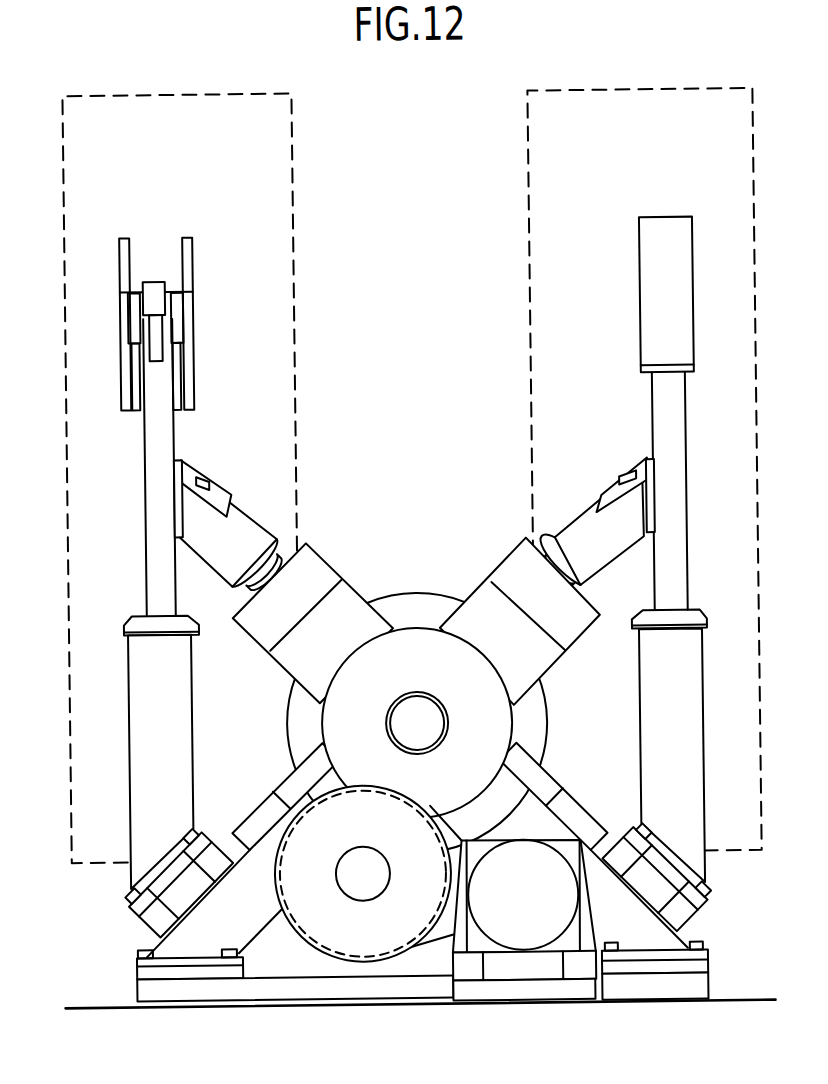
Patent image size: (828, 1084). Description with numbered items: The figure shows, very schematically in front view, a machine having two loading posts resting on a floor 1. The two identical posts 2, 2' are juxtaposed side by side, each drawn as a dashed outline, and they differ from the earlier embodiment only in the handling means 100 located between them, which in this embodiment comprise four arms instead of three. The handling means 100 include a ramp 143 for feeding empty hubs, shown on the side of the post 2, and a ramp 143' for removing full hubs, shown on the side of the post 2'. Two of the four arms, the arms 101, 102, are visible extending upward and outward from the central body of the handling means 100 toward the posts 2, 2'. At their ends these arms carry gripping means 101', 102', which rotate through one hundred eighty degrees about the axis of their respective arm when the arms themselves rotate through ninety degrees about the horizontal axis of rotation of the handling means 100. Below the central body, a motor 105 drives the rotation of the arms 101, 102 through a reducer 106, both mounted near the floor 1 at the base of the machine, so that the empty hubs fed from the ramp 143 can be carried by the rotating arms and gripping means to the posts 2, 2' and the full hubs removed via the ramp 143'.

The floor 1 is at (96, 1004).
The post 2 is at (182, 507).
The post 2' is at (645, 516).
The ramp for feeding empty hubs 143 is at (137, 295).
The ramp for removing full hubs 143' is at (630, 272).
The handling means 100 is at (427, 582).
The arm 101 is at (248, 524).
The gripping means 101' is at (220, 464).
The arm 102 is at (574, 521).
The gripping means 102' is at (605, 464).
The motor 105 is at (535, 921).
The reducer 106 is at (367, 931).